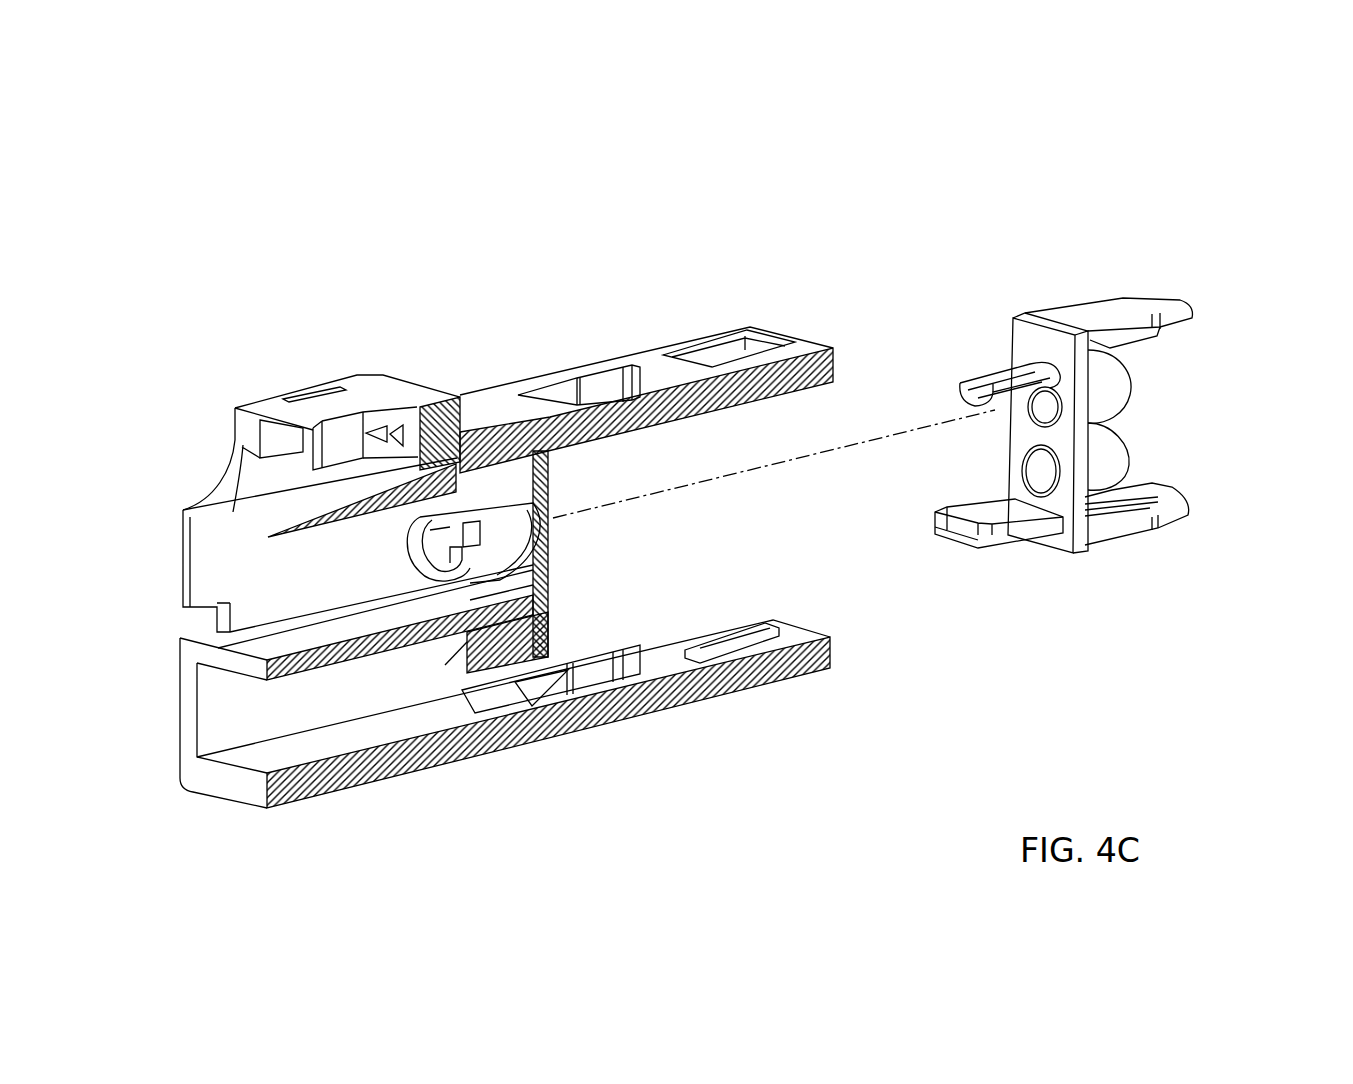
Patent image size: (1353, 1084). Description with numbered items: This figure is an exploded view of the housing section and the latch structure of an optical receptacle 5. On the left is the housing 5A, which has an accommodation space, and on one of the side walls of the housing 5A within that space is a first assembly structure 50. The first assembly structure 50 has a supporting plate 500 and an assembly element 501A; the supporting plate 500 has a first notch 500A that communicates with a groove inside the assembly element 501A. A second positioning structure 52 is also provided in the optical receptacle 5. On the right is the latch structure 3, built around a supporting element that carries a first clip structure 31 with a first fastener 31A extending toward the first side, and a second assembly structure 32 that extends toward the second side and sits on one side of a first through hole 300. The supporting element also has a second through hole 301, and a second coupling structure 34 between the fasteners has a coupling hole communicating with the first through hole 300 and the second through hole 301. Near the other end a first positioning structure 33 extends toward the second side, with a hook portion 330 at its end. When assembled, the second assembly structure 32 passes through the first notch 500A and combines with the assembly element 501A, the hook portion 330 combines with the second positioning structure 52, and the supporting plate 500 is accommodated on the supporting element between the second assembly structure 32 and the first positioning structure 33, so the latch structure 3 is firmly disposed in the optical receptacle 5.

The optical receptacle 5 is at (266, 388).
The housing 5A is at (388, 395).
The first assembly structure 50 is at (549, 541).
The supporting plate 500 is at (545, 625).
The first notch 500A is at (510, 500).
The assembly element 501A is at (490, 557).
The second positioning structure 52 is at (468, 656).
The latch structure 3 is at (1003, 301).
The second assembly structure 32 is at (1031, 375).
The first clip structure 31 is at (1094, 300).
The first fastener 31A is at (1118, 302).
The second coupling structure 34 is at (1117, 388).
The first through hole 300 is at (1047, 400).
The second through hole 301 is at (1047, 472).
The first positioning structure 33 is at (1006, 520).
The hook portion 330 is at (963, 540).